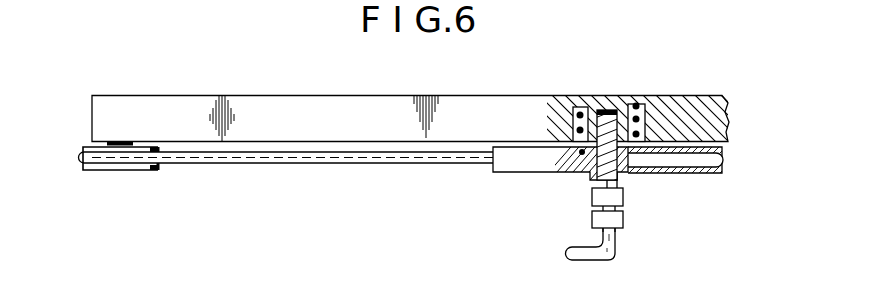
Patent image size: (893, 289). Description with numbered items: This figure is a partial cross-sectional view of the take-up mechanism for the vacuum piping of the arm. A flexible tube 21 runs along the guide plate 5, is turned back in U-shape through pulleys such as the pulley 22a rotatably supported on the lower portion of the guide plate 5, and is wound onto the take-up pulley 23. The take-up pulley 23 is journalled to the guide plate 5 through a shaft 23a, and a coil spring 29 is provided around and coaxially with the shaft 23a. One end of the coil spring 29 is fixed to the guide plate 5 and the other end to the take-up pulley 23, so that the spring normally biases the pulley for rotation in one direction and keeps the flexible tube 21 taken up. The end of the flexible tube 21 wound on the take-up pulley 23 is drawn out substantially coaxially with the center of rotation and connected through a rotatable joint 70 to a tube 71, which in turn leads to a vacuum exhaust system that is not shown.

The guide plate 5 is at (446, 95).
The flexible tube 21 is at (310, 168).
The pulley 22a is at (147, 172).
The take-up pulley 23 is at (703, 173).
The shaft 23a is at (612, 117).
The coil spring 29 is at (583, 108).
The rotatable joint 70 is at (623, 221).
The tube 71 is at (614, 252).